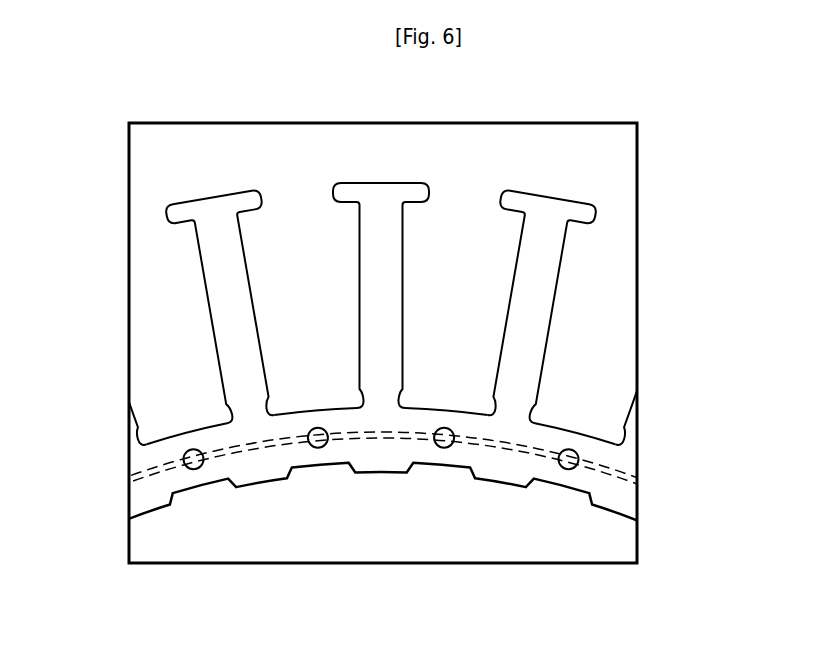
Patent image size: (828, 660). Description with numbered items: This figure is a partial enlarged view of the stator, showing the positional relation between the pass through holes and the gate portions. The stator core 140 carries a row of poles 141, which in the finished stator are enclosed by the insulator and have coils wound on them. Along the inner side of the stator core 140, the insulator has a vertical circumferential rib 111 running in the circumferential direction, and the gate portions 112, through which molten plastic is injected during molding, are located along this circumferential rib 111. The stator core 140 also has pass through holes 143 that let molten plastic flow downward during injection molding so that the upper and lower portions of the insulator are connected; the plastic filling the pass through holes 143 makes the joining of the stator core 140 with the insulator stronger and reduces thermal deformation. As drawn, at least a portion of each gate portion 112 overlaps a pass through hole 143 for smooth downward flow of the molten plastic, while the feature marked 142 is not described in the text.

The stator core 140 is at (380, 325).
The pole 141 is at (392, 290).
The circumferential rib 111 is at (366, 438).
The gate portion 112 is at (458, 436).
The protrusion 142 is at (207, 477).
The pass through hole 143 is at (441, 448).